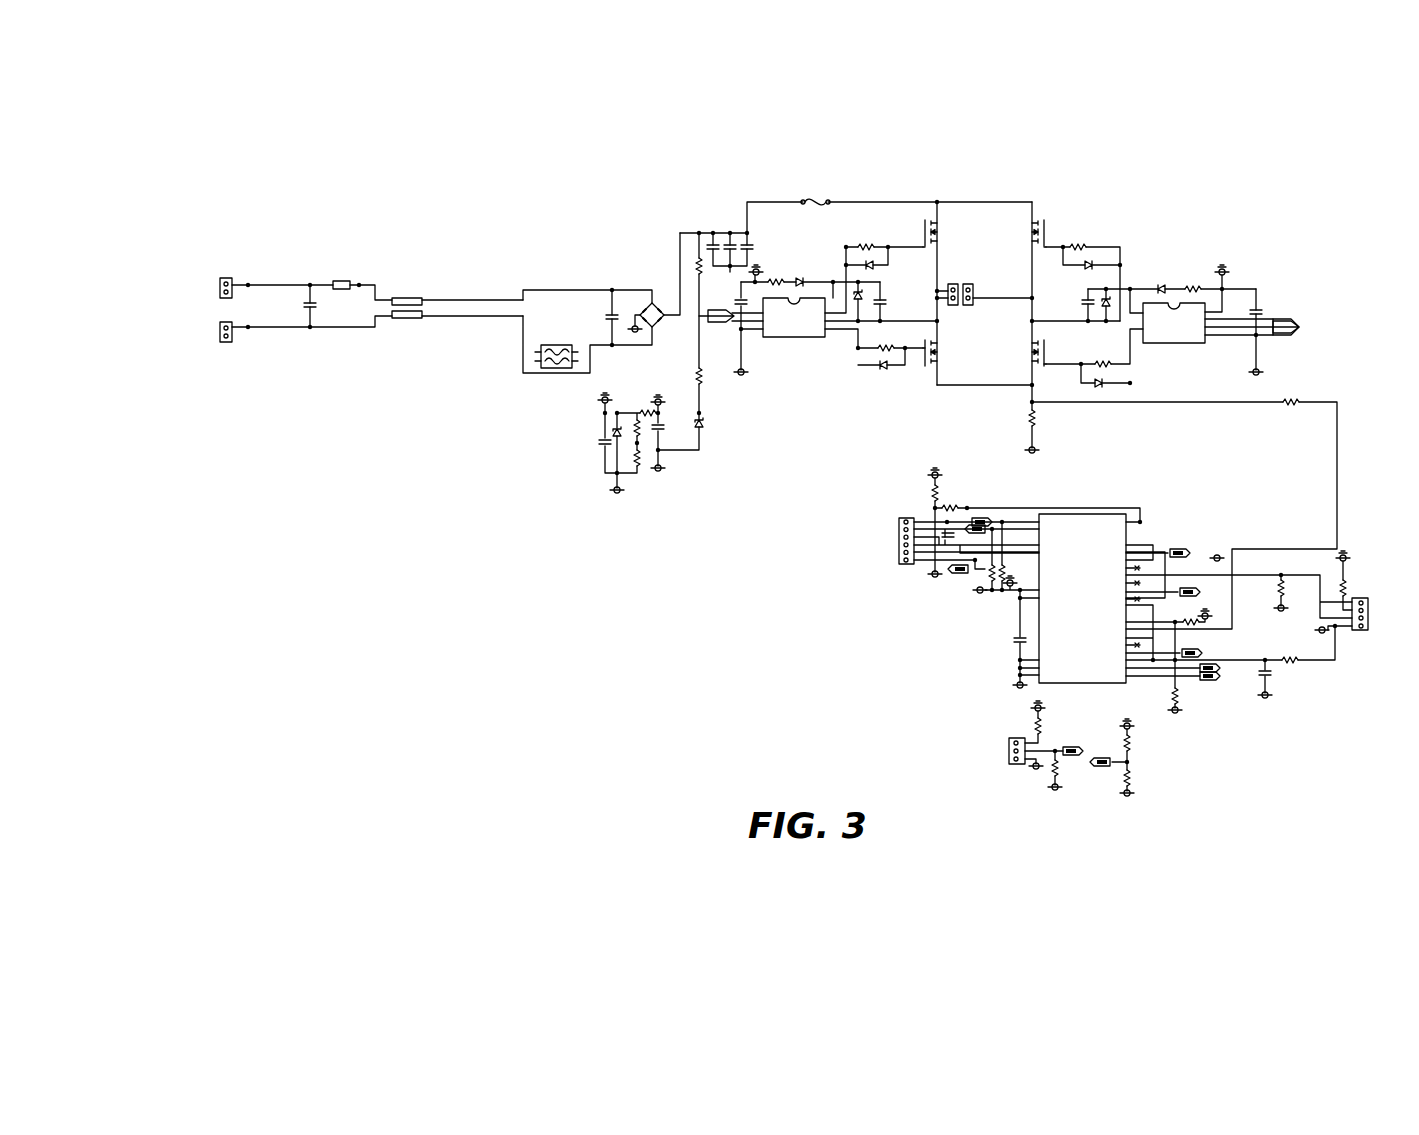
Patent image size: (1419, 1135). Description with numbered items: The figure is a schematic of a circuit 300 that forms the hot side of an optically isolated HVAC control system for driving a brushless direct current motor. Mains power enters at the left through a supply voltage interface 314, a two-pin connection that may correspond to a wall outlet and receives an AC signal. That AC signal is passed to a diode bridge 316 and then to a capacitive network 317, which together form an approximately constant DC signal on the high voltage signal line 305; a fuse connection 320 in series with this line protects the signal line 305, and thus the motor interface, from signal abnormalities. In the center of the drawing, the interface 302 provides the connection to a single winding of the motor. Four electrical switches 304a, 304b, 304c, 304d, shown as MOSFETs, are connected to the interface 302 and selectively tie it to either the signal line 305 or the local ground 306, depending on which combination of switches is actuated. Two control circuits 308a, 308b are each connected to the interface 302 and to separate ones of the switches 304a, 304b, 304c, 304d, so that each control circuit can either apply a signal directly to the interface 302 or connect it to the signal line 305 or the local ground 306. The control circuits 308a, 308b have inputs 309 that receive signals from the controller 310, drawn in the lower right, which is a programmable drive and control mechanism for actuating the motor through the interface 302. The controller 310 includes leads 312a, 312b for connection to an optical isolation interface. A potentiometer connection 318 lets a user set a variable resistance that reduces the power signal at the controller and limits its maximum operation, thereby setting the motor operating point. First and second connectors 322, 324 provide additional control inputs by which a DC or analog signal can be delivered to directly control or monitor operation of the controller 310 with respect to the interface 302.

The circuit 300 is at (527, 715).
The interface 302 is at (957, 282).
The electrical switch 304a is at (925, 220).
The electrical switch 304b is at (925, 380).
The electrical switch 304c is at (1040, 220).
The electrical switch 304d is at (1028, 385).
The signal line 305 is at (996, 202).
The local ground 306 is at (1043, 447).
The control circuit 308a is at (775, 340).
The control circuit 308b is at (1160, 348).
The inputs 309 is at (718, 333).
The controller 310 is at (1120, 685).
The lead 312a is at (1188, 668).
The lead 312b is at (1192, 678).
The supply voltage interface 314 is at (205, 302).
The diode bridge 316 is at (650, 302).
The capacitive network 317 is at (697, 208).
The potentiometer connection 318 is at (1010, 729).
The fuse connection 320 is at (806, 200).
The first connector 322 is at (900, 516).
The second connector 324 is at (1362, 632).